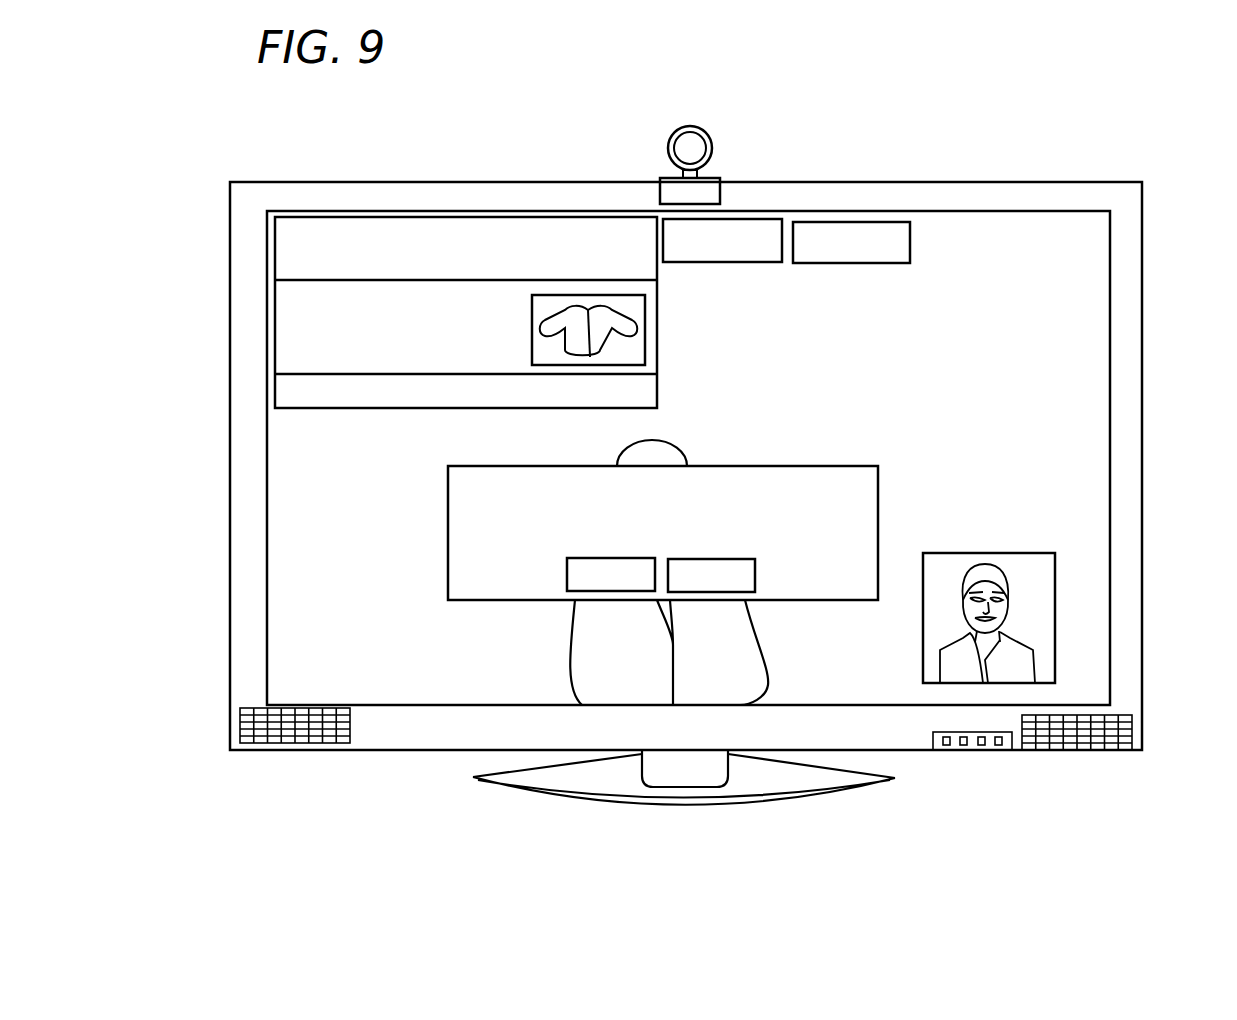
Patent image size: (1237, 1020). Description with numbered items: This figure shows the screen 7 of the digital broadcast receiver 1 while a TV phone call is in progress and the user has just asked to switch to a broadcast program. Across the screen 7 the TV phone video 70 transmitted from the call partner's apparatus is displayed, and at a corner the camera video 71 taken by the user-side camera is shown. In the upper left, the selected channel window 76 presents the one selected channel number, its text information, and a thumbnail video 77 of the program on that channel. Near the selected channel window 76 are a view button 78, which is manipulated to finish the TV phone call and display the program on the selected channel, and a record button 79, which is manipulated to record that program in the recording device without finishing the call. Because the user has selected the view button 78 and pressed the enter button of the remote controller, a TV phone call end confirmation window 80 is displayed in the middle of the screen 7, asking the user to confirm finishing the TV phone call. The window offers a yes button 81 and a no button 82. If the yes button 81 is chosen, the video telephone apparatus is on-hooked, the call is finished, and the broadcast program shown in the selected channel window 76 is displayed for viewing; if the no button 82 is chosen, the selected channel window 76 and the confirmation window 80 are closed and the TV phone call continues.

The digital broadcast receiver 1 is at (618, 183).
The screen 7 is at (977, 215).
The TV phone video 70 is at (950, 498).
The camera video 71 is at (1054, 617).
The selected channel window 76 is at (570, 217).
The thumbnail video 77 is at (550, 295).
The view button 78 is at (720, 262).
The record button 79 is at (848, 263).
The TV phone call end confirmation window 80 is at (797, 466).
The yes button 81 is at (563, 577).
The no button 82 is at (755, 582).